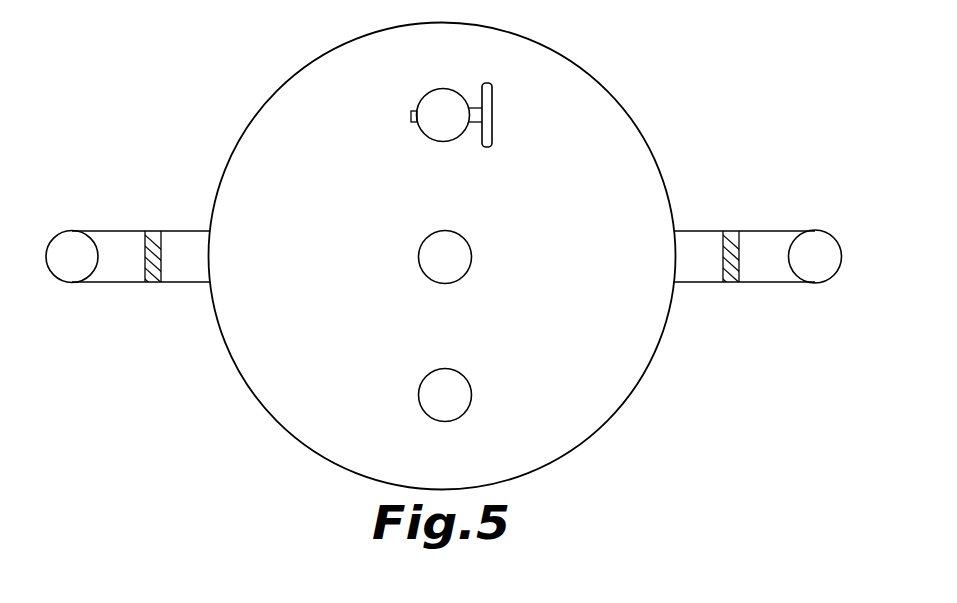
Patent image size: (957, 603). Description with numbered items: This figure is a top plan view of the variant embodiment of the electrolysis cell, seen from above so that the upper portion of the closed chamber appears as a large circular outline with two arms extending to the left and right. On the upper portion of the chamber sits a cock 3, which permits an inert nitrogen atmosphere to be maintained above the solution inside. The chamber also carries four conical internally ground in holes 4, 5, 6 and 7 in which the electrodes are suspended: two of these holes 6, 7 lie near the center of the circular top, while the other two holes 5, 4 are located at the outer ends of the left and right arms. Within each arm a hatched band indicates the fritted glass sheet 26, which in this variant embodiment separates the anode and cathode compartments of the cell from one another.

The cock 3 is at (483, 90).
The conical internally ground in hole 4 is at (817, 272).
The conical internally ground in hole 5 is at (77, 275).
The conical internally ground in hole 6 is at (455, 280).
The conical internally ground in hole 7 is at (463, 417).
The fritted glass sheet 26 is at (155, 282).